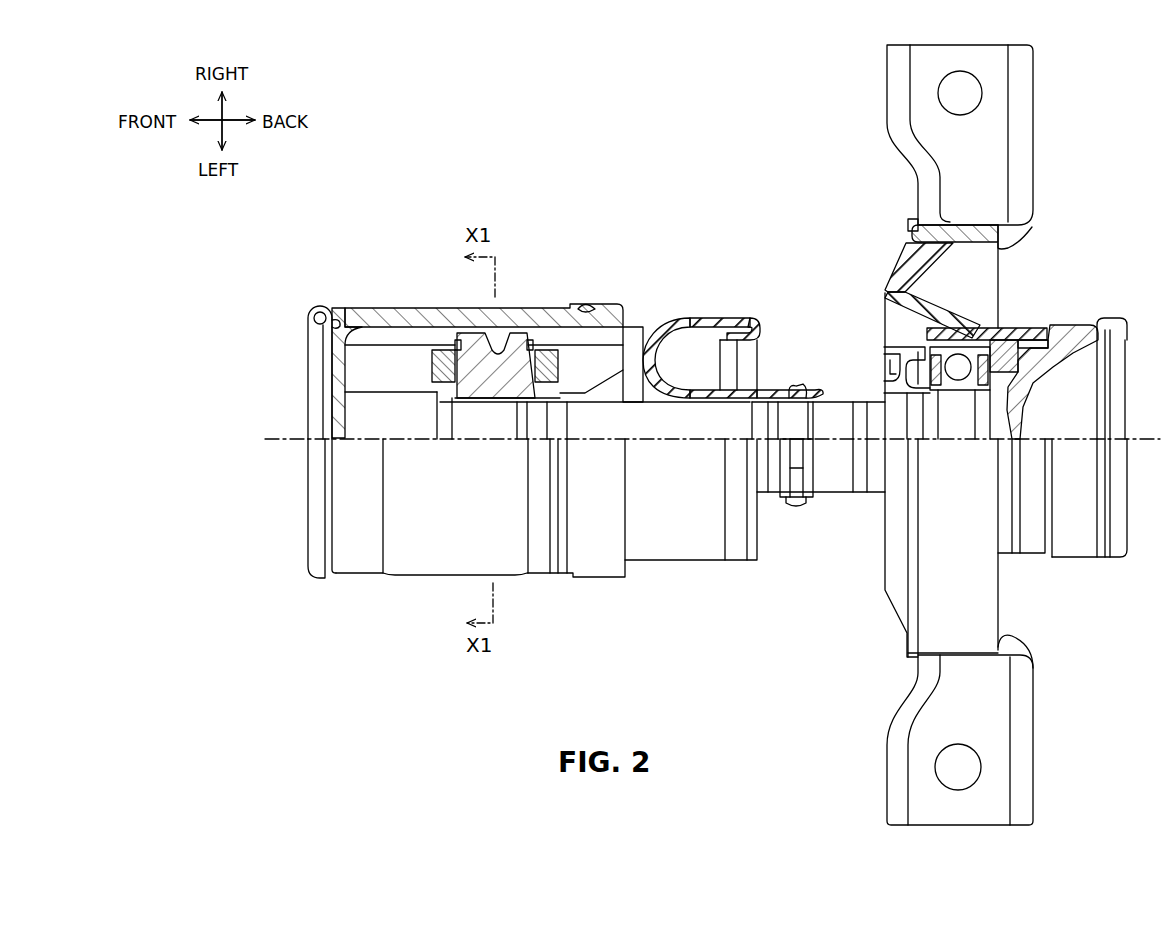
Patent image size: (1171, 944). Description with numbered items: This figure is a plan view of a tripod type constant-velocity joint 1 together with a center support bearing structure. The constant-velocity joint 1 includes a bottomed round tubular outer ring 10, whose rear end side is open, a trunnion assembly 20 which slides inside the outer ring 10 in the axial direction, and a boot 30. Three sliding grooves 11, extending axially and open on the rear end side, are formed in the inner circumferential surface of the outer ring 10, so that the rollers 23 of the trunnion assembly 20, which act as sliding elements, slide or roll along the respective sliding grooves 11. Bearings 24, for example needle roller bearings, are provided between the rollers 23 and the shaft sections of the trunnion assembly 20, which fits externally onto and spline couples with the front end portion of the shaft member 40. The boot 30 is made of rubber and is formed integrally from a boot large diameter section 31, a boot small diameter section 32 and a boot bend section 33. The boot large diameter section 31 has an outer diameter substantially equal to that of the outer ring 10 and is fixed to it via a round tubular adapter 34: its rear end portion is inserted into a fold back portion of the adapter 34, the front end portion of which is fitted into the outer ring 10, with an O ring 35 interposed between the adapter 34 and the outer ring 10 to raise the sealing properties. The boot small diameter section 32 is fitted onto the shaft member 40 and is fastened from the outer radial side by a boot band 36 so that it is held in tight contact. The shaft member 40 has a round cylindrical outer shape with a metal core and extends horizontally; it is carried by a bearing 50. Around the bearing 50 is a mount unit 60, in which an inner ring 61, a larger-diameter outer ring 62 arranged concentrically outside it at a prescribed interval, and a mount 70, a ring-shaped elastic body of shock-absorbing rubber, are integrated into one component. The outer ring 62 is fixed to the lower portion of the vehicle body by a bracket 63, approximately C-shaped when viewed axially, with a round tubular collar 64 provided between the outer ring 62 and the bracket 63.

The tripod type constant-velocity joint 1 is at (497, 150).
The outer ring 10 is at (408, 307).
The sliding grooves 11 is at (380, 368).
The trunnion assembly 20 is at (541, 335).
The rollers 23 is at (553, 345).
The bearings 24 is at (452, 348).
The boot 30 is at (664, 324).
The boot large diameter section 31 is at (724, 320).
The boot small diameter section 32 is at (767, 392).
The boot bend section 33 is at (645, 357).
The adapter 34 is at (693, 320).
The O ring 35 is at (590, 305).
The boot band 36 is at (798, 386).
The shaft member 40 is at (840, 397).
The bearing 50 is at (1003, 353).
The mount unit 60 is at (877, 262).
The inner ring 61 is at (978, 335).
The outer ring 62 is at (898, 228).
The bracket 63 is at (1035, 112).
The collar 64 is at (1030, 231).
The mount 70 is at (884, 281).